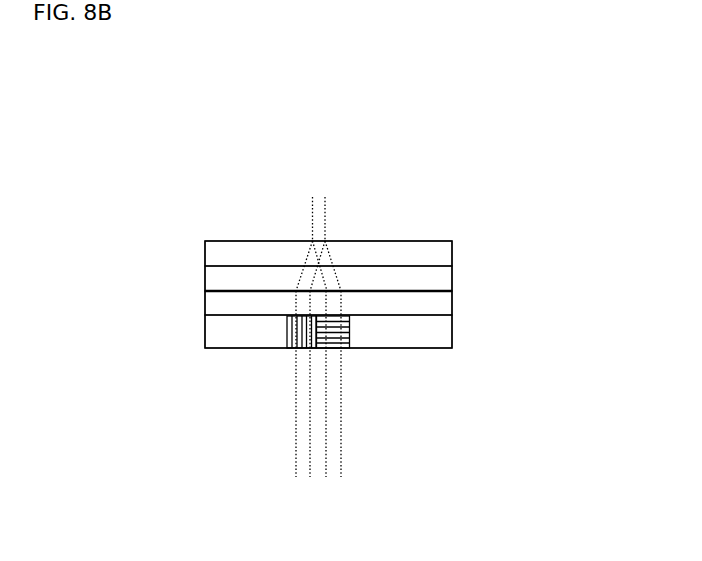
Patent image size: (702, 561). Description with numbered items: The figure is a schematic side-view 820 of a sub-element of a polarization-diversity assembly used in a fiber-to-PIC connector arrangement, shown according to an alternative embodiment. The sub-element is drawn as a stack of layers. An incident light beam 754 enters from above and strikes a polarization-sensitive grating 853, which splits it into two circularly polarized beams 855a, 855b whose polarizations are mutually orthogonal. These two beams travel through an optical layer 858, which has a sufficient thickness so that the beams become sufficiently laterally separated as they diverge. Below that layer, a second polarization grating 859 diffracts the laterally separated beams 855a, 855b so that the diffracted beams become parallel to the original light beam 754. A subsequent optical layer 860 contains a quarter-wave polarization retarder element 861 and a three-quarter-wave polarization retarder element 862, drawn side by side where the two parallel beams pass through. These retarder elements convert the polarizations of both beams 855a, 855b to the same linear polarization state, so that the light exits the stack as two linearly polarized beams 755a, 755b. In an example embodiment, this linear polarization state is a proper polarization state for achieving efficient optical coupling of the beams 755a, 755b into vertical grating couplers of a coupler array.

The schematic side-view 820 is at (95, 90).
The polarization-sensitive grating 853 is at (215, 251).
The optical layer 858 is at (215, 277).
The second polarization grating 859 is at (215, 303).
The subsequent optical layer 860 is at (215, 333).
The incident light beam 754 is at (322, 208).
The circularly polarized beam 855a is at (308, 273).
The circularly polarized beam 855b is at (332, 287).
The linearly polarized beam 755a is at (303, 445).
The linearly polarized beam 755b is at (333, 445).
The three-quarter-wave polarization retarder element 862 is at (287, 332).
The quarter-wave polarization retarder element 861 is at (350, 332).